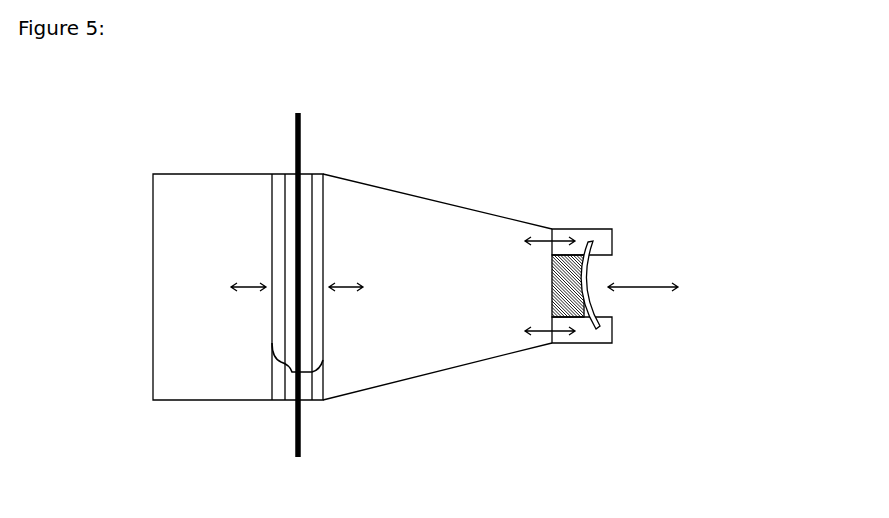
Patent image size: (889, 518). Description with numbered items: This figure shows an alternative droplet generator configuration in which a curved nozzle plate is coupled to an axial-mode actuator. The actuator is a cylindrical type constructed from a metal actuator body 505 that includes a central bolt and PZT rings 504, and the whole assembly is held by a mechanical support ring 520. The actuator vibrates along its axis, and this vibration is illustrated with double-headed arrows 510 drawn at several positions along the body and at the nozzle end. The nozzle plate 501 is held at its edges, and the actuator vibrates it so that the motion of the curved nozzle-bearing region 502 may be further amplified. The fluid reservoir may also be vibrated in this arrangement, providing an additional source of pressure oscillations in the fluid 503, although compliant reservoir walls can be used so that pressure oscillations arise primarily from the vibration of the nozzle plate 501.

The nozzle plate 501 is at (595, 311).
The nozzle-bearing region 502 is at (583, 282).
The fluid 503 is at (564, 265).
The PZT rings 504 is at (297, 373).
The metal actuator body 505 is at (447, 343).
The double-headed arrows 510 is at (248, 280).
The mechanical support ring 520 is at (295, 132).